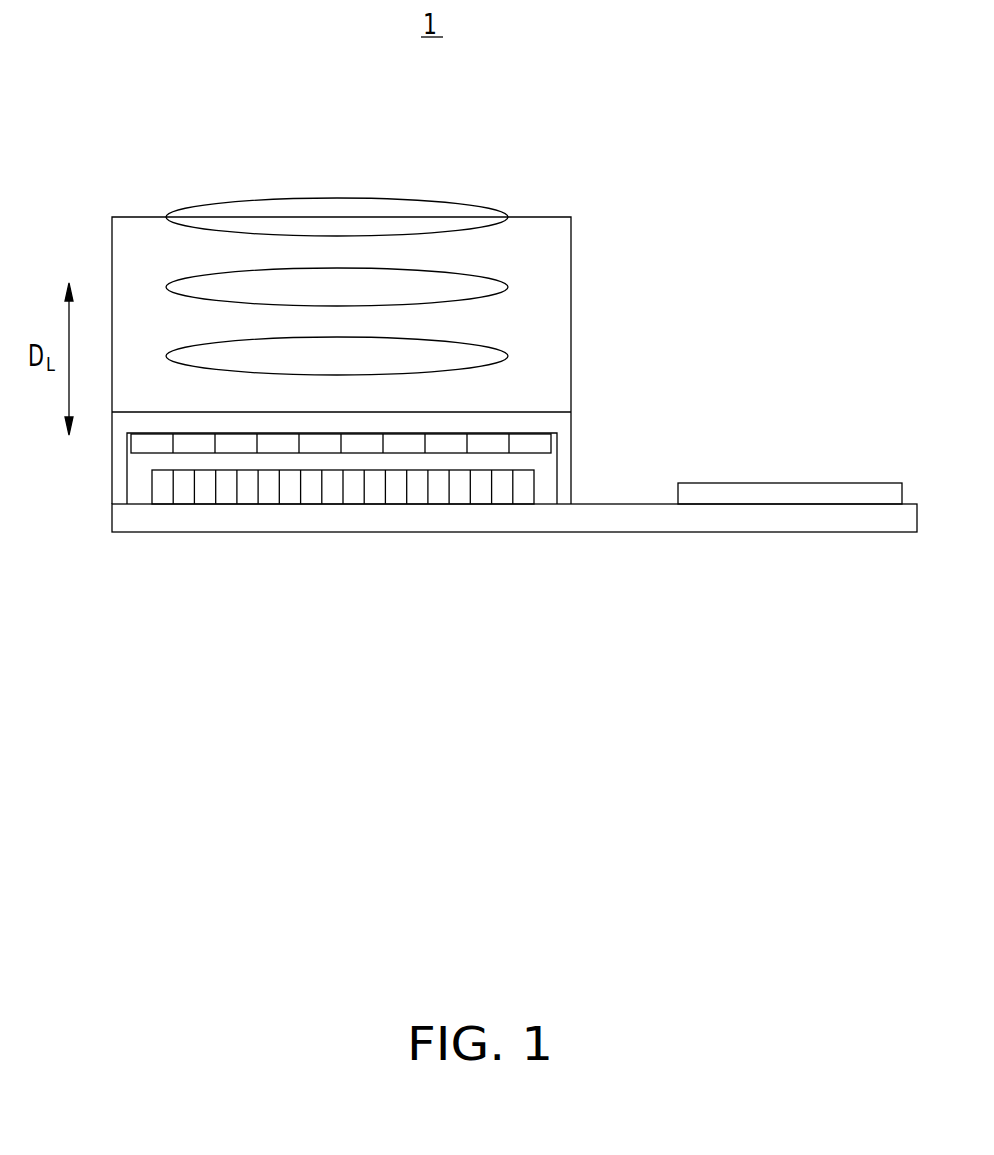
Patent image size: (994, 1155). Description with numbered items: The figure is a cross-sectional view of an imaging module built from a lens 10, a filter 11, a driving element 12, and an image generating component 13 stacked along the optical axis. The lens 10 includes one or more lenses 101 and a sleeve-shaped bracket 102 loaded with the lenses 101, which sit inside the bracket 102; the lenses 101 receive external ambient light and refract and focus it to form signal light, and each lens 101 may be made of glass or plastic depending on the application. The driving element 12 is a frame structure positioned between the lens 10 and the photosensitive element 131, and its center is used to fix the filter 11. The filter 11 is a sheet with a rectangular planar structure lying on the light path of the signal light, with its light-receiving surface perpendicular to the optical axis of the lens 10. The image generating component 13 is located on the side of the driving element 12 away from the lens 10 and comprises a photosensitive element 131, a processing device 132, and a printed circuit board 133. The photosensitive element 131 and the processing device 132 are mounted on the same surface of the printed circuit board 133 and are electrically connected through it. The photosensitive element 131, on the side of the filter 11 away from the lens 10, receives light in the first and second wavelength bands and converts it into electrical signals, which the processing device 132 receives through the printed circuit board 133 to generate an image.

The lens 10 is at (341, 290).
The lenses 101 is at (337, 254).
The bracket 102 is at (149, 233).
The filter 11 is at (533, 443).
The driving element 12 is at (562, 452).
The image generating component 13 is at (514, 560).
The photosensitive element 131 is at (523, 487).
The processing device 132 is at (790, 541).
The printed circuit board 133 is at (648, 518).